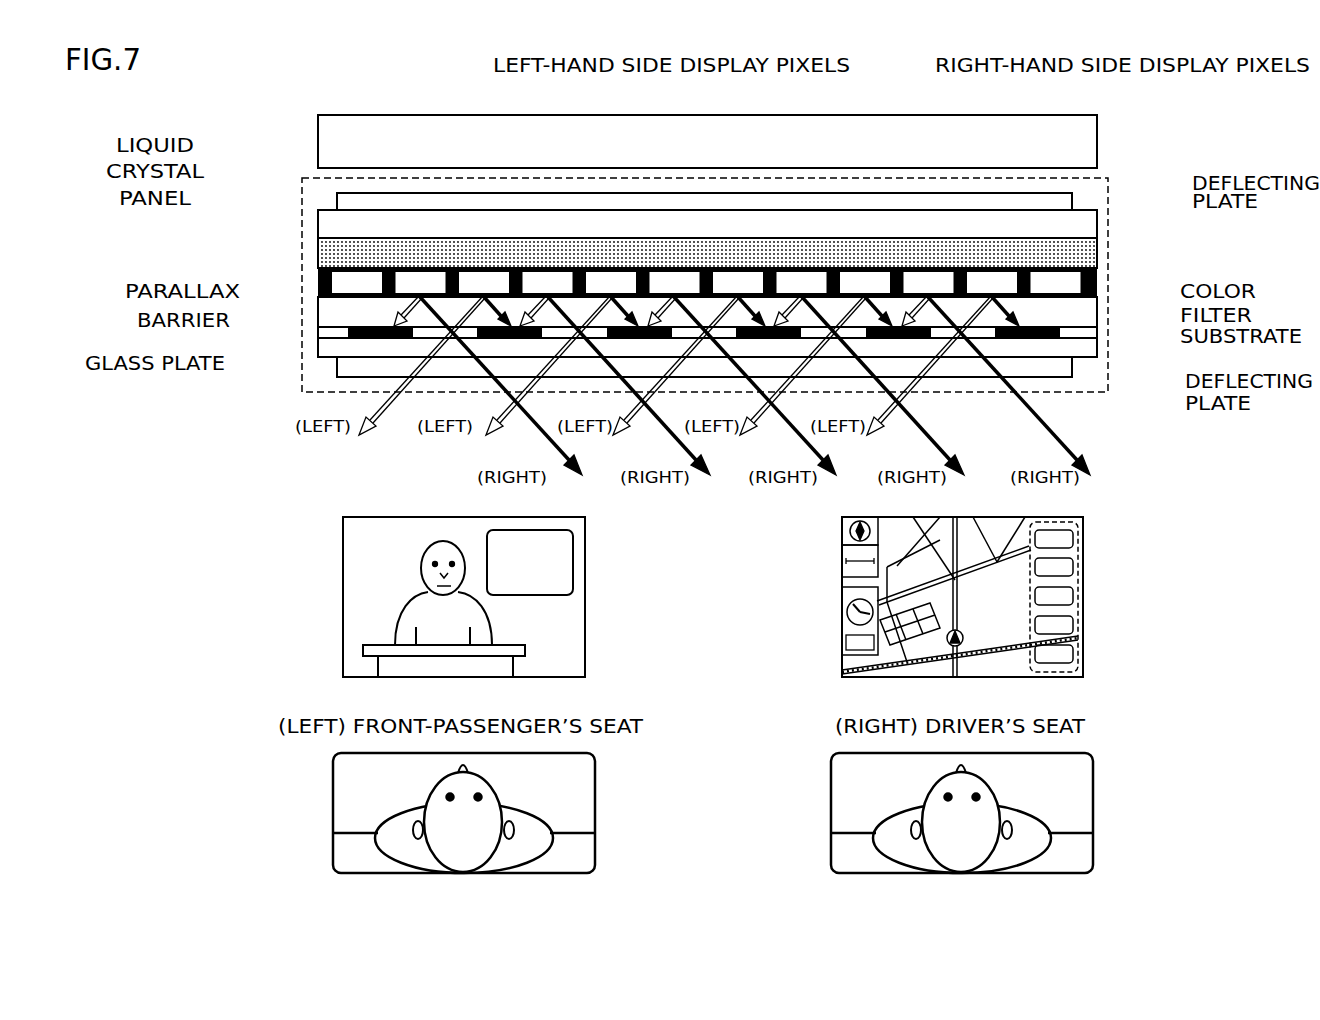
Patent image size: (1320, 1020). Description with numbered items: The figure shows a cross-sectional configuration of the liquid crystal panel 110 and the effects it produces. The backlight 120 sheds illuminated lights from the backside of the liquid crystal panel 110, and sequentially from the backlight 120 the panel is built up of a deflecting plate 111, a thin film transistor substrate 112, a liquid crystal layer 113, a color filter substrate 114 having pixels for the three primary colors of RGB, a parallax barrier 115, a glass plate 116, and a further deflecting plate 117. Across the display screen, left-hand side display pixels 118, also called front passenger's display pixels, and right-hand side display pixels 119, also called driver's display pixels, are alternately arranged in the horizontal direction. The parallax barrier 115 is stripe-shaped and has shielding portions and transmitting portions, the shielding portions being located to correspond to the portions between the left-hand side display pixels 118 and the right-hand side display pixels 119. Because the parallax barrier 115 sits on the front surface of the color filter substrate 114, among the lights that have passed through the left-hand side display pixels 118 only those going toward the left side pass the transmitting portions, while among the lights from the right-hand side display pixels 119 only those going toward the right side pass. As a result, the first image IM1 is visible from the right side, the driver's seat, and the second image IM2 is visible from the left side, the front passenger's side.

The liquid crystal panel 110 is at (302, 195).
The deflecting plate 111 is at (1072, 200).
The thin film transistor (TFT) substrate 112 is at (327, 220).
The liquid crystal layer 113 is at (1097, 257).
The color filter substrate 114 is at (1102, 268).
The parallax barrier 115 is at (318, 332).
The glass plate 116 is at (318, 345).
The deflecting plate 117 is at (1072, 368).
The left-hand side display pixels 118 is at (620, 266).
The right-hand side display pixels 119 is at (1065, 266).
The backlight 120 is at (1097, 140).
The first image IM1 is at (1083, 595).
The second image IM2 is at (585, 595).